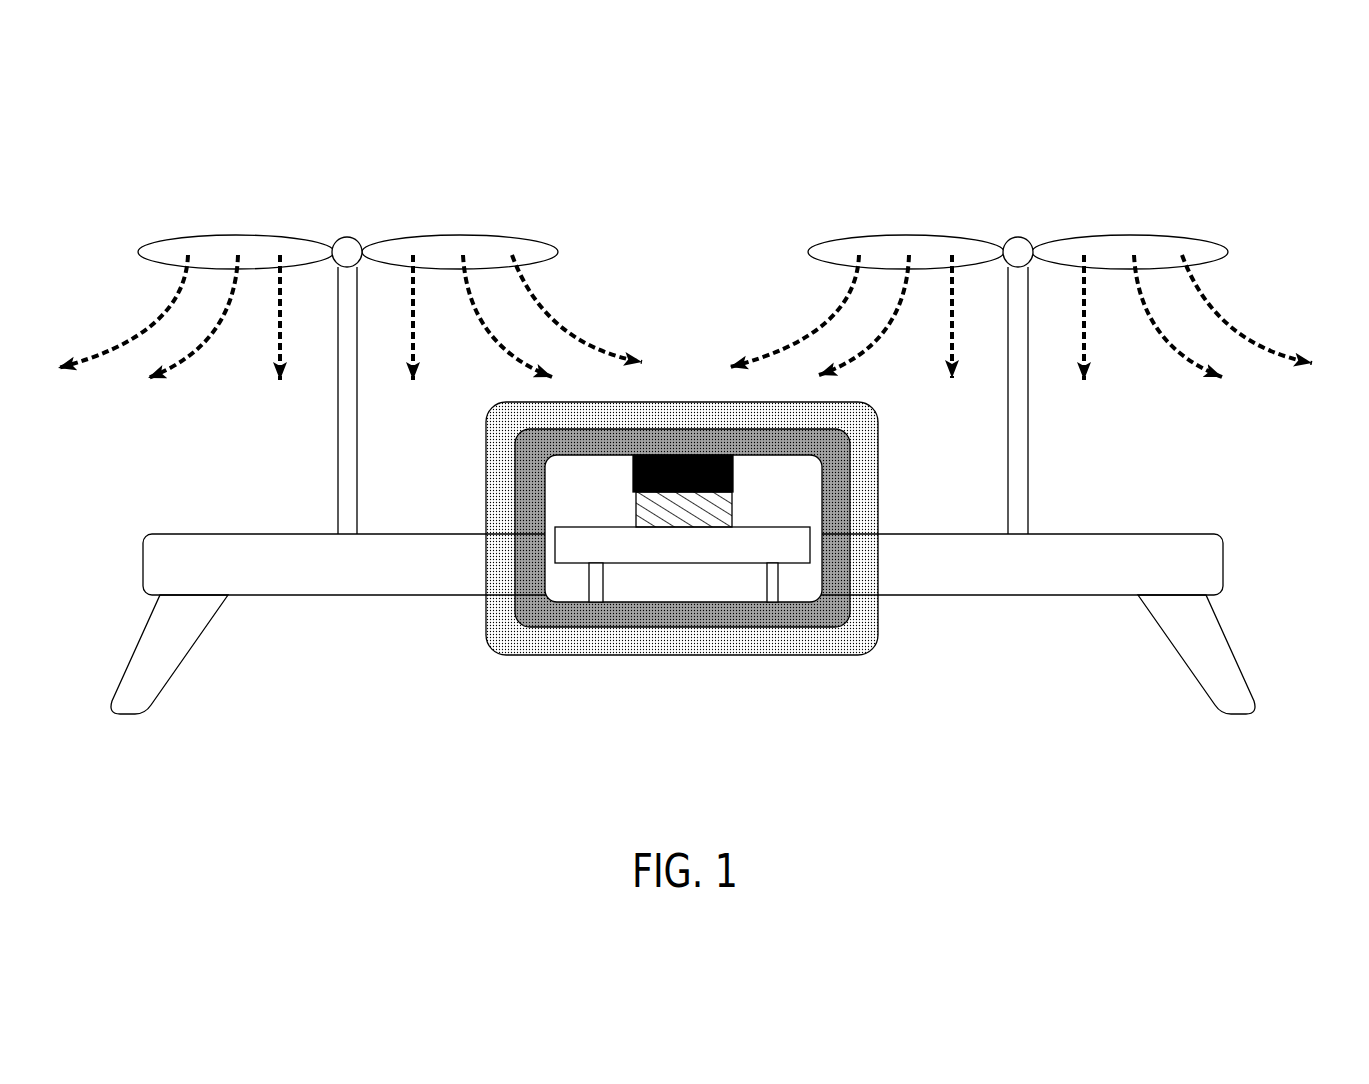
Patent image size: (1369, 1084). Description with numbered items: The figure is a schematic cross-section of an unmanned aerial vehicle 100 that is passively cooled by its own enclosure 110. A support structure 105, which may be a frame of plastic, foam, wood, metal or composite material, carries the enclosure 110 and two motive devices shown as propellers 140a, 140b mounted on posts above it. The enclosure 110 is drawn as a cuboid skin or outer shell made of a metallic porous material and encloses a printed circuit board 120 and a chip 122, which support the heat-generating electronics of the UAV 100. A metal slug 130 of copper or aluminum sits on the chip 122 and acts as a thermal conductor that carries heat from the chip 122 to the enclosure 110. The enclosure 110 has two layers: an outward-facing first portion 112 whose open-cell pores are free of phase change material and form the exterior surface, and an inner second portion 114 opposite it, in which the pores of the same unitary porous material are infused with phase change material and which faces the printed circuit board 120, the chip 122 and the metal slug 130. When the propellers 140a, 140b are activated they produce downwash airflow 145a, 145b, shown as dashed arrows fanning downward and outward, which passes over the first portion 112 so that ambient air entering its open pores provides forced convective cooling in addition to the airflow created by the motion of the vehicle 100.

The unmanned aerial vehicle 100 is at (645, 183).
The support structure 105 is at (1123, 533).
The enclosure 110 is at (615, 655).
The first portion 112 is at (669, 645).
The second portion 114 is at (770, 612).
The printed circuit board 120 is at (625, 563).
The chip 122 is at (732, 508).
The metal slug 130 is at (733, 475).
The propeller 140a is at (355, 235).
The propeller 140b is at (1022, 235).
The downwash airflow 145a is at (560, 325).
The downwash airflow 145b is at (1243, 333).